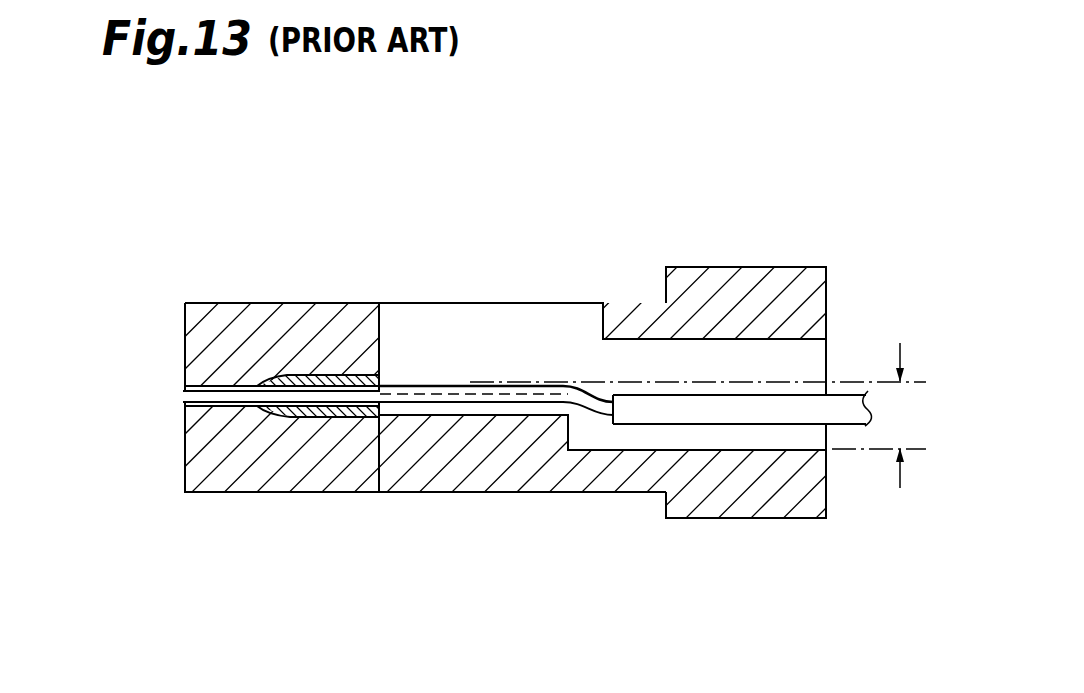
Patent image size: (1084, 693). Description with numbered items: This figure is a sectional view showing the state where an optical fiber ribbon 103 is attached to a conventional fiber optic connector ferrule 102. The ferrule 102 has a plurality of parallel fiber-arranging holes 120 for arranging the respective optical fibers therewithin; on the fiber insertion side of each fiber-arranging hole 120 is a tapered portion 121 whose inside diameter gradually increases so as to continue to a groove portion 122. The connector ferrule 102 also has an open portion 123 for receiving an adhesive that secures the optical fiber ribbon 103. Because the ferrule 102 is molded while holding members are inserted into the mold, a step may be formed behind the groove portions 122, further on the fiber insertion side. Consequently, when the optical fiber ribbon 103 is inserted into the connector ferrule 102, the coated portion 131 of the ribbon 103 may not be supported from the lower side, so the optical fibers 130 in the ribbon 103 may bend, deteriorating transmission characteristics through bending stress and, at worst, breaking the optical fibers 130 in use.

The fiber optic connector ferrule 102 is at (722, 258).
The optical fiber ribbon 103 is at (812, 382).
The fiber-arranging hole 120 is at (225, 386).
The tapered portion 121 is at (307, 375).
The groove portion 122 is at (442, 418).
The open portion 123 is at (483, 312).
The optical fiber 130 is at (247, 398).
The coated portion 131 is at (643, 413).